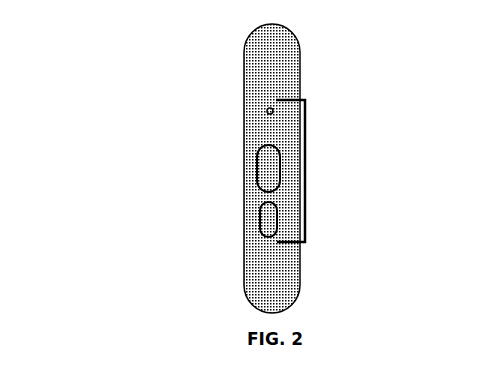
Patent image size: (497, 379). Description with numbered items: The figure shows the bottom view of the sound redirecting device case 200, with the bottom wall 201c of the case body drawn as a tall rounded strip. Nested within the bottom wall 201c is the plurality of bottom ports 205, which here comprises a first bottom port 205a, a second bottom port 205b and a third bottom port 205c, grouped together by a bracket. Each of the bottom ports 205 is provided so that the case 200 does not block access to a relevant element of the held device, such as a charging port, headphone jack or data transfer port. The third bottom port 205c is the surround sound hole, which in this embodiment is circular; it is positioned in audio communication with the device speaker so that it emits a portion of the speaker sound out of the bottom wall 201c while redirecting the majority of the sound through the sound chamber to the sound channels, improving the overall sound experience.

The device case 200 is at (232, 168).
The bottom wall 201c is at (282, 77).
The plurality of bottom ports 205 is at (335, 184).
The first bottom port 205a is at (268, 218).
The second bottom port 205b is at (267, 172).
The third bottom port 205c is at (274, 112).